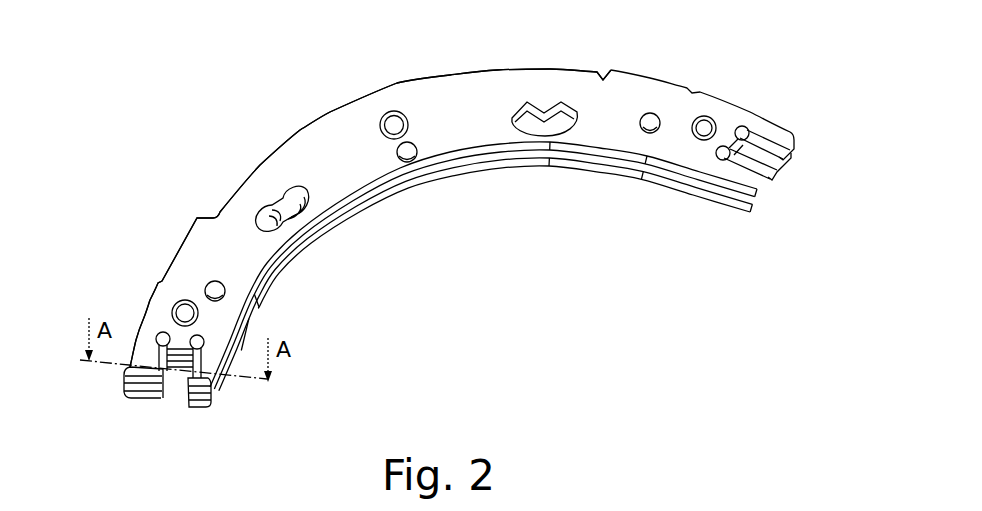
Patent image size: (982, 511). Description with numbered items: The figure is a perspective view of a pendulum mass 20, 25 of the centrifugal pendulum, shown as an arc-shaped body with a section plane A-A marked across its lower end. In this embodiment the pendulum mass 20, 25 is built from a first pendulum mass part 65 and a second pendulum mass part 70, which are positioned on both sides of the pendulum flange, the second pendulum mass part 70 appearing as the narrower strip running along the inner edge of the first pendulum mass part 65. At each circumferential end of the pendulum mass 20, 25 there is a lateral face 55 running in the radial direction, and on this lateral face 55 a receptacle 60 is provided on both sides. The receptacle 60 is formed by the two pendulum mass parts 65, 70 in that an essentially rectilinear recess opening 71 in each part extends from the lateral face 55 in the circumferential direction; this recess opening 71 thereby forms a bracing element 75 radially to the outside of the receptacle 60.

The pendulum mass 20 is at (500, 56).
The pendulum mass 25 is at (370, 183).
The first pendulum mass part 65 is at (723, 108).
The bracing element 75 is at (767, 130).
The lateral face 55 is at (797, 148).
The receptacle 60 is at (778, 170).
The second pendulum mass part 70 is at (720, 190).
The recess opening 71 is at (183, 378).